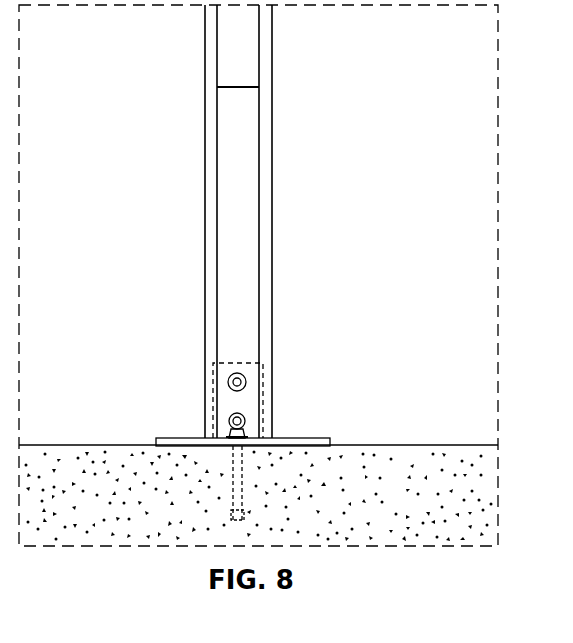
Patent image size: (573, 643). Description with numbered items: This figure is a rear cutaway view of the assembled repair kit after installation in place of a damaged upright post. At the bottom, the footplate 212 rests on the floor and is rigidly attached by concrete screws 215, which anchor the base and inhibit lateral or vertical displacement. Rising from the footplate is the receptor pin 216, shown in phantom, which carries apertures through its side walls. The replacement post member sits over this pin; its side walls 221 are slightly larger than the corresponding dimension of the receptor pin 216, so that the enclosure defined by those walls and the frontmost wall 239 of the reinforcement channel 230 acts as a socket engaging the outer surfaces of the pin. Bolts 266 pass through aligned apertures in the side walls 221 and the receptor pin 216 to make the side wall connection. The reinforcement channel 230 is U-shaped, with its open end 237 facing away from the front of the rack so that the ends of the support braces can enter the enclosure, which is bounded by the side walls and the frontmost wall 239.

The reinforcement channel 230 is at (235, 221).
The side walls 221 is at (205, 233).
The open end 237 is at (238, 87).
The frontmost wall 239 is at (236, 287).
The receptor pin 216 is at (250, 391).
The bolts 266 is at (241, 379).
The footplate 212 is at (172, 438).
The concrete screws 215 is at (240, 480).